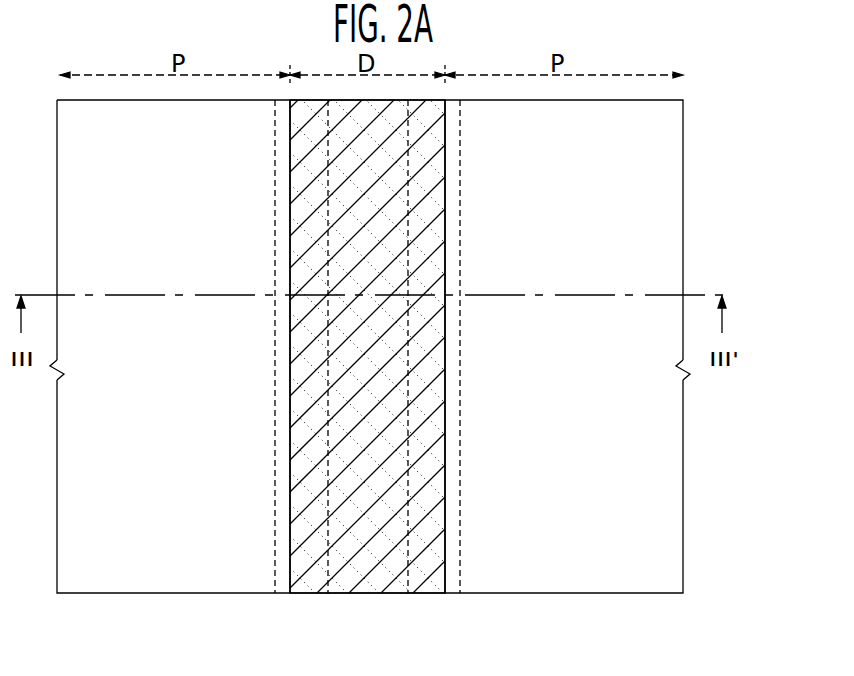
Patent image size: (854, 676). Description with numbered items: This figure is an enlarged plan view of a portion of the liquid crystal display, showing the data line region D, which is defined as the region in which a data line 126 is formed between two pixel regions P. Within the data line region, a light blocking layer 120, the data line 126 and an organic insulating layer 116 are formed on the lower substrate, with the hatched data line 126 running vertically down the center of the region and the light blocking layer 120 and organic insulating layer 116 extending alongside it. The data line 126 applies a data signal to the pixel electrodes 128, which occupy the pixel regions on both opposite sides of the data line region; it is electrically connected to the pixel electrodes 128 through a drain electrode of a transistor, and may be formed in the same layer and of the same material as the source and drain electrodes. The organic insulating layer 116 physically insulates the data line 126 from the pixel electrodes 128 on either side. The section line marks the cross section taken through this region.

The organic insulating layer 116 is at (450, 580).
The light blocking layer 120 is at (283, 593).
The data line 126 is at (416, 578).
The pixel electrodes 128 is at (577, 593).